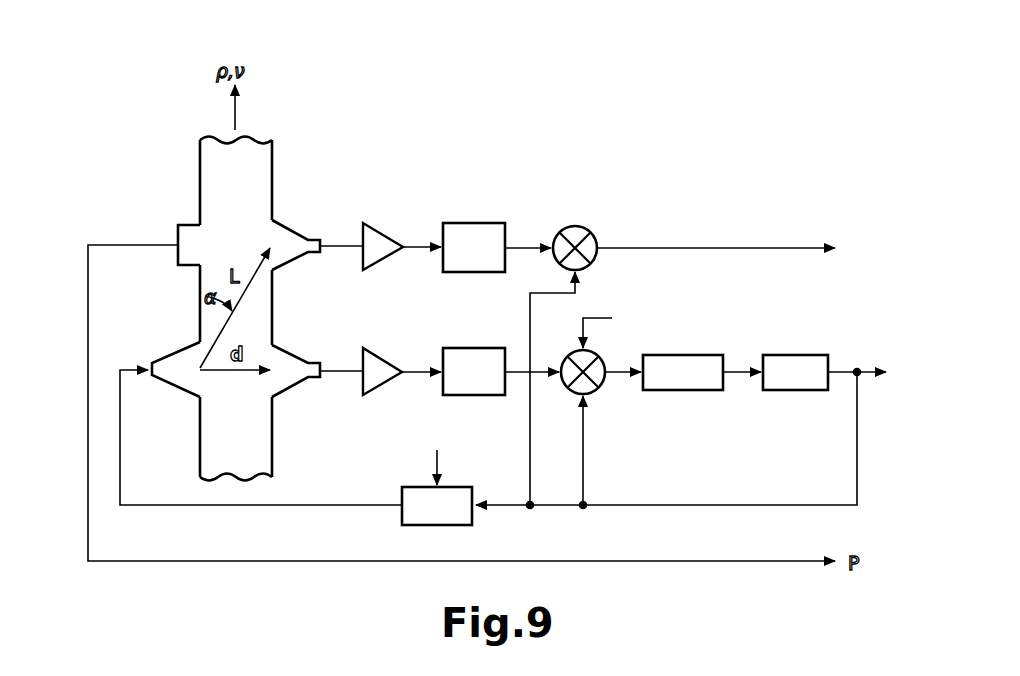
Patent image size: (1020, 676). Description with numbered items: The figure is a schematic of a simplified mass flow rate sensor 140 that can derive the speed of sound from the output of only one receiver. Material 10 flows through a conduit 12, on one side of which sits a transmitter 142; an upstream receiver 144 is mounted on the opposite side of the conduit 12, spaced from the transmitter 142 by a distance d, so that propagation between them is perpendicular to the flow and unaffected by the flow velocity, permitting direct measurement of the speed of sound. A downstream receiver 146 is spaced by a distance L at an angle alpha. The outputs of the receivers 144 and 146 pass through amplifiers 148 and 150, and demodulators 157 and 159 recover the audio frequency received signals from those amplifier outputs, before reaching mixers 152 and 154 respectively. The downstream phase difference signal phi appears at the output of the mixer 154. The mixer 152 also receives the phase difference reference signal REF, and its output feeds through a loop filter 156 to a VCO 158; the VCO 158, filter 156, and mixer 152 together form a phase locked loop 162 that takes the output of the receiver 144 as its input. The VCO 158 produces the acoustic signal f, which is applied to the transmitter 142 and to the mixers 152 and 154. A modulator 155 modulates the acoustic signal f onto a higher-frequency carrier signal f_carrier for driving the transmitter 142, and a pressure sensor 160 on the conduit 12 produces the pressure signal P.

The material 10 is at (253, 194).
The conduit 12 is at (200, 151).
The sensor 140 is at (408, 162).
The transmitter 142 is at (177, 348).
The upstream receiver 144 is at (292, 350).
The downstream receiver 146 is at (289, 226).
The amplifier 148 is at (380, 357).
The amplifier 150 is at (383, 232).
The mixer 152 is at (600, 392).
The mixer 154 is at (573, 223).
The modulator 155 is at (402, 488).
The loop filter 156 is at (700, 355).
The demodulator 157 is at (477, 348).
The VCO 158 is at (792, 355).
The demodulator 159 is at (478, 223).
The pressure sensor 160 is at (178, 228).
The phase locked loop 162 is at (675, 333).